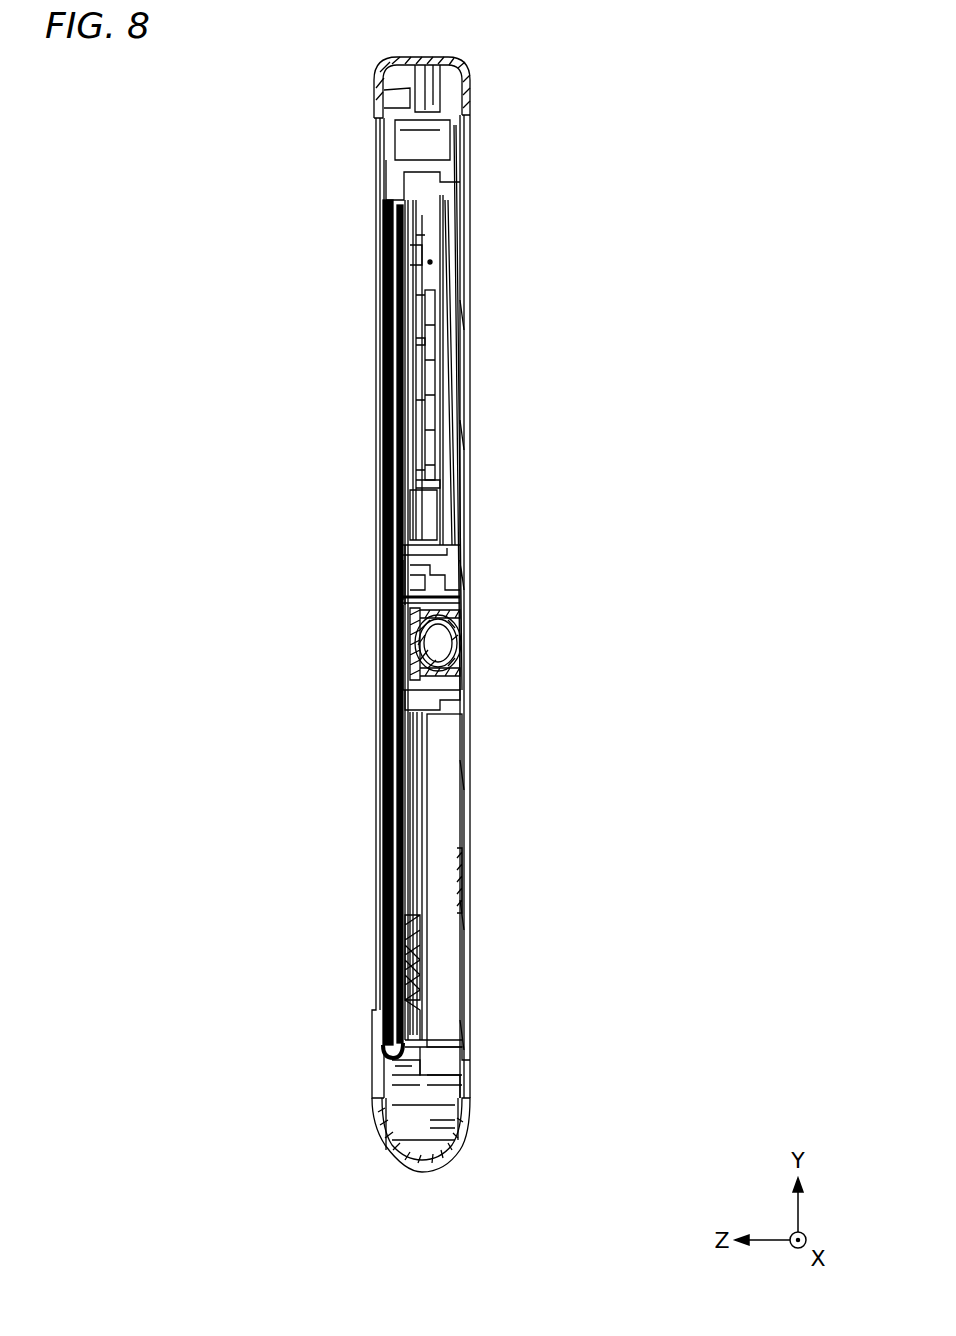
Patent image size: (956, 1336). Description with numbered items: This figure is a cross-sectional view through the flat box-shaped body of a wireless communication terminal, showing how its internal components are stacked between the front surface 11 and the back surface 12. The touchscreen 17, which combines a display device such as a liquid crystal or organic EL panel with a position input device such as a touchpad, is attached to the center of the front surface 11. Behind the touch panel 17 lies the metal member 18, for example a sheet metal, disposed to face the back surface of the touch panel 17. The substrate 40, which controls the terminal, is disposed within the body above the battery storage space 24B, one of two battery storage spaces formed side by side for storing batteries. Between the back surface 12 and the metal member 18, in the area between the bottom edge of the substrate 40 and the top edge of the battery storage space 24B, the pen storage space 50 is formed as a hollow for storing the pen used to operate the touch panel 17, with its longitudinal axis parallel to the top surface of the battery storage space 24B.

The front surface 11 is at (374, 99).
The back surface 12 is at (470, 97).
The touchscreen 17 is at (386, 223).
The metal member 18 is at (400, 603).
The substrate 40 is at (435, 343).
The pen storage space 50 is at (462, 641).
The battery storage space 24B is at (447, 978).